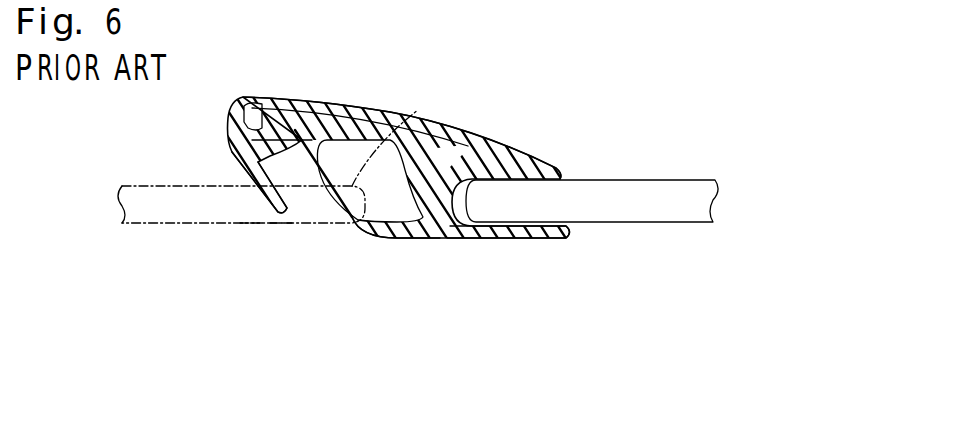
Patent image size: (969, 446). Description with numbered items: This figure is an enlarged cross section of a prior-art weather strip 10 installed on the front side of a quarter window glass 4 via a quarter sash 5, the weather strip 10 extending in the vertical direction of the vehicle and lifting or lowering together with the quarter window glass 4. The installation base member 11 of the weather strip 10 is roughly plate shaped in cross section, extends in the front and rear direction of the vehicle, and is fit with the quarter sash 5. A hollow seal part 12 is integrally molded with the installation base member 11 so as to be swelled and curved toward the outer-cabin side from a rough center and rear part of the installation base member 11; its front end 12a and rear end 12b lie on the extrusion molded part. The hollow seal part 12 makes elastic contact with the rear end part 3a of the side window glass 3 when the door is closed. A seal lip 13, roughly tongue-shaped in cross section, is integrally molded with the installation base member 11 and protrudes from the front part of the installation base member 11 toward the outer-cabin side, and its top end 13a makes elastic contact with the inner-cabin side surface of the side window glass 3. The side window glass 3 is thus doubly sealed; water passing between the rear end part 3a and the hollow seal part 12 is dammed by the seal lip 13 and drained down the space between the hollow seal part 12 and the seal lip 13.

The side window glass 3 is at (190, 228).
The rear end part of the side window glass 3a is at (396, 124).
The quarter window glass 4 is at (597, 188).
The quarter sash 5 is at (440, 126).
The weather strip 10 is at (344, 240).
The installation base member 11 is at (353, 127).
The hollow seal part 12 is at (392, 238).
The front end of the hollow seal part 12a is at (236, 168).
The rear end of the hollow seal part 12b is at (438, 234).
The seal lip 13 is at (250, 224).
The top end of the seal lip 13a is at (281, 224).